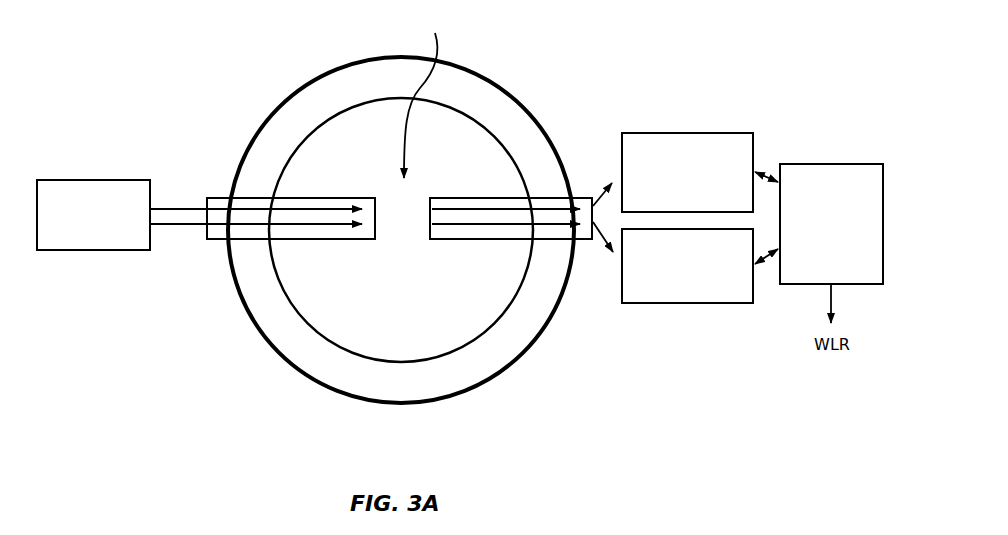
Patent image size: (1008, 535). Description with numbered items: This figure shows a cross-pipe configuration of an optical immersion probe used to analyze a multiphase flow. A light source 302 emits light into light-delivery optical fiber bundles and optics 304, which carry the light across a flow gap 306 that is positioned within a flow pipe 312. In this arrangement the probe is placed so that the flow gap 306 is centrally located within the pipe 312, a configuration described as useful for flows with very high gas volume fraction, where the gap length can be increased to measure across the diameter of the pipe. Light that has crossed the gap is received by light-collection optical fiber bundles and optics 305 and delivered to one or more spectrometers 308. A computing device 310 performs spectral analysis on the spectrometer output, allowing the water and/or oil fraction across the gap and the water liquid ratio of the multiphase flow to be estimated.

The light source 302 is at (93, 215).
The light-delivery optical fiber bundles and optics 304 is at (182, 225).
The light-collection optical fiber bundles and optics 305 is at (581, 197).
The flow gap 306 is at (426, 97).
The spectrometers 308 is at (687, 218).
The computing device 310 is at (831, 224).
The flow pipe 312 is at (504, 89).